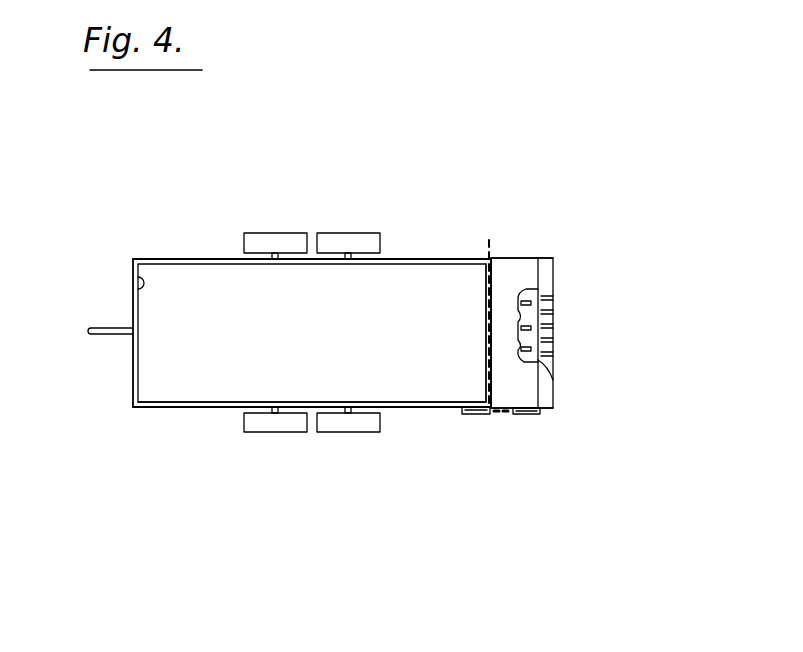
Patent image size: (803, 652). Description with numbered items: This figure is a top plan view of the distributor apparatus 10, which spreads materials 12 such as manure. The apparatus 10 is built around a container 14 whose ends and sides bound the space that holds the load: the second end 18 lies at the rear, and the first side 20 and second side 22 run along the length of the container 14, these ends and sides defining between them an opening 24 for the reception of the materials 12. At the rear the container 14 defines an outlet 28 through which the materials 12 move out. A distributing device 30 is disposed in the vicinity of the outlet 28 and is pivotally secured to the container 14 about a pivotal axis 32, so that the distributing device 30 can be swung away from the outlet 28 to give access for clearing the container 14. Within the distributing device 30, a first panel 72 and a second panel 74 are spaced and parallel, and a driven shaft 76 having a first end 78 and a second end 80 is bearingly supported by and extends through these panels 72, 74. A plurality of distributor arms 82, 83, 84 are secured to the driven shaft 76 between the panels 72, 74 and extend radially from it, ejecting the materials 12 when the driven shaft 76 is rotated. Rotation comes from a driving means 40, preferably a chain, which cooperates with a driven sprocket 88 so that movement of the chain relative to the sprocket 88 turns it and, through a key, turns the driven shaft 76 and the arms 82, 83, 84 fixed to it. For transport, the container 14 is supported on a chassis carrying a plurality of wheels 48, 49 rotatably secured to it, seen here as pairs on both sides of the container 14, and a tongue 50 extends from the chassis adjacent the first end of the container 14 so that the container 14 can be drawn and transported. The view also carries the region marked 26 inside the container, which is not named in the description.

The distributor apparatus 10 is at (355, 156).
The materials 12 is at (228, 329).
The container 14 is at (421, 259).
The second end 18 is at (430, 372).
The first side 20 is at (173, 405).
The second side 22 is at (190, 260).
The opening 24 is at (133, 268).
The rear wall 26 is at (468, 336).
The outlet 28 is at (483, 257).
The distributing device 30 is at (521, 278).
The pivotal axis 32 is at (488, 424).
The driving means 40 is at (478, 414).
The wheel 48 is at (256, 427).
The wheel 49 is at (334, 425).
The tongue 50 is at (100, 335).
The first panel 72 is at (520, 412).
The second panel 74 is at (500, 258).
The driven shaft 76 is at (543, 362).
The first end 78 is at (553, 410).
The second end 80 is at (522, 268).
The distributor arm 82 is at (553, 300).
The distributor arm 83 is at (553, 320).
The distributor arm 84 is at (553, 350).
The driven sprocket 88 is at (520, 413).